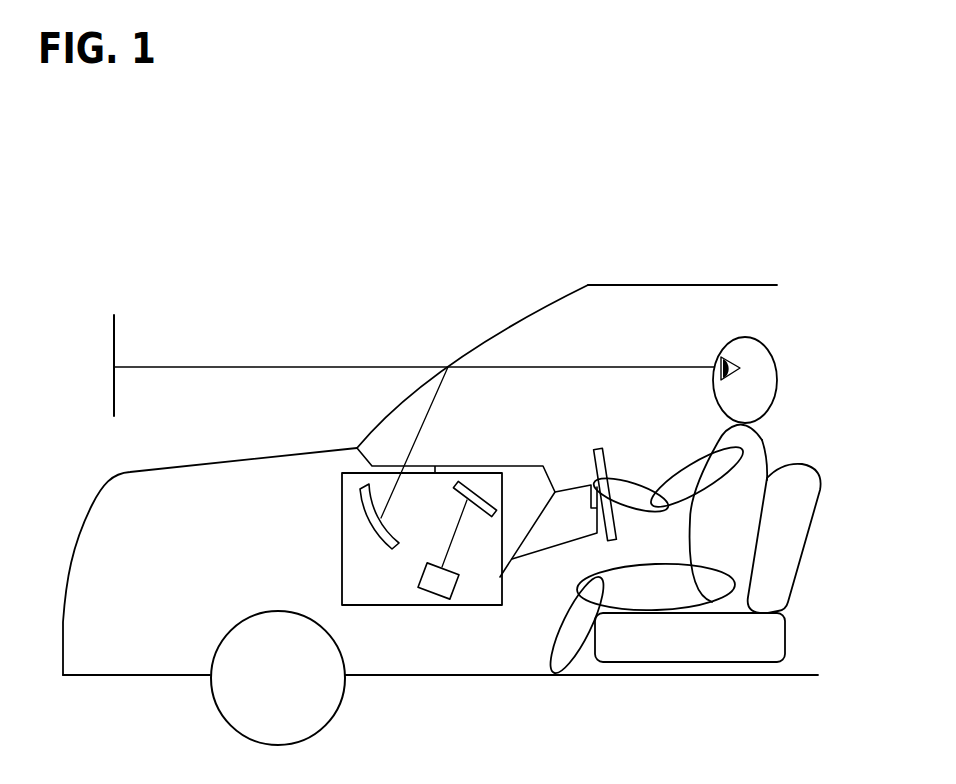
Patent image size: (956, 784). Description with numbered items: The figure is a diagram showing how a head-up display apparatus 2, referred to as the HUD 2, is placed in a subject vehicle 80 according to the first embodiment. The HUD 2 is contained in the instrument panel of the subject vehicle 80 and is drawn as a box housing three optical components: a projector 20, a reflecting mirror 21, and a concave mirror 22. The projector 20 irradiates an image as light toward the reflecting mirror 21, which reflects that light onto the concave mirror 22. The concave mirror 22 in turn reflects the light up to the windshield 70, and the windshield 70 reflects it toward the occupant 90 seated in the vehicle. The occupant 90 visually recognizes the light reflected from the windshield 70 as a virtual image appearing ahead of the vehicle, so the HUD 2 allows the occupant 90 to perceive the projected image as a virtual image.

The head-up display apparatus 2 is at (391, 612).
The projector 20 is at (438, 600).
The reflecting mirror 21 is at (468, 488).
The concave mirror 22 is at (467, 502).
The windshield 70 is at (524, 318).
The subject vehicle 80 is at (684, 283).
The occupant 90 is at (777, 380).